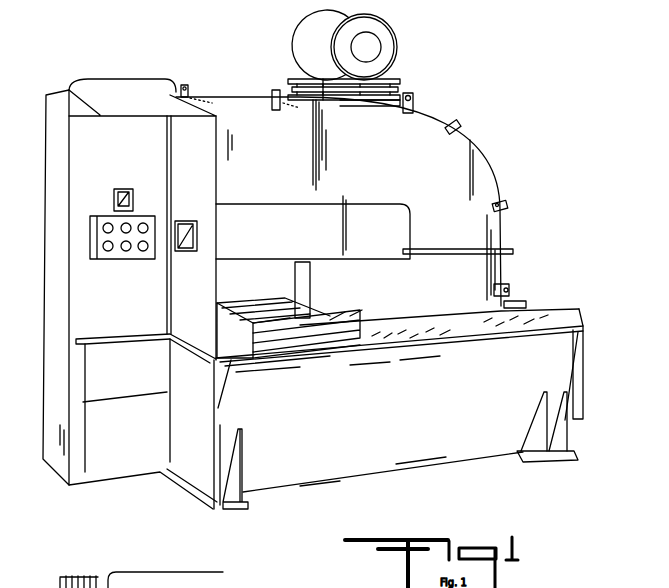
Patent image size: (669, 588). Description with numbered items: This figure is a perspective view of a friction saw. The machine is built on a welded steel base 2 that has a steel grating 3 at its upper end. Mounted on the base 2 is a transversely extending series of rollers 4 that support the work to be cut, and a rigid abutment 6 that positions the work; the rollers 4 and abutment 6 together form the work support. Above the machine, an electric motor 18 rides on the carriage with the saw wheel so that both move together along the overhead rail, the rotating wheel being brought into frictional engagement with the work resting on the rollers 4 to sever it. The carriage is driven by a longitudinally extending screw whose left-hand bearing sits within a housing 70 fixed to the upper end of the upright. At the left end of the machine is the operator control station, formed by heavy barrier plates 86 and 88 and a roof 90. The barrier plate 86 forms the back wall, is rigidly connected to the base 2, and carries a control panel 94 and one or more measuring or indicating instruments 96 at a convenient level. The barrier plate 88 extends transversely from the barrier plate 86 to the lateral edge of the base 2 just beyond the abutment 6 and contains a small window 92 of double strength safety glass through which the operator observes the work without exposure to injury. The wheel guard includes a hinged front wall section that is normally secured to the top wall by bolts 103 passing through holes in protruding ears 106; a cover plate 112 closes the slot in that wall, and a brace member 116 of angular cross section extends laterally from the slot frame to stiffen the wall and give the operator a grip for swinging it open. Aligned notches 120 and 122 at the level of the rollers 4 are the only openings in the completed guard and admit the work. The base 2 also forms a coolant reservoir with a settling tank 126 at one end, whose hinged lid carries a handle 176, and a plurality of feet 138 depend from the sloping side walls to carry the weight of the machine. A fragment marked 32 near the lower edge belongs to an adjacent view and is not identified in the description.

The base 2 is at (471, 446).
The steel grating 3 is at (470, 318).
The rollers 4 is at (311, 336).
The rigid abutment 6 is at (258, 362).
The electric motor 18 is at (297, 55).
The element of next figure 32 is at (120, 580).
The housing 70 is at (125, 79).
The barrier plate 86 is at (77, 181).
The barrier plate 88 is at (214, 180).
The roof 90 is at (183, 85).
The window 92 is at (180, 222).
The control panel 94 is at (141, 253).
The measuring or indicating instruments 96 is at (117, 192).
The bolts 103 is at (191, 79).
The ears 106 is at (190, 95).
The cover plate 112 is at (354, 204).
The brace member 116 is at (462, 253).
The notch 120 is at (293, 288).
The notch 122 is at (311, 299).
The settling tank 126 is at (595, 380).
The feet 138 is at (247, 509).
The handle 176 is at (514, 299).